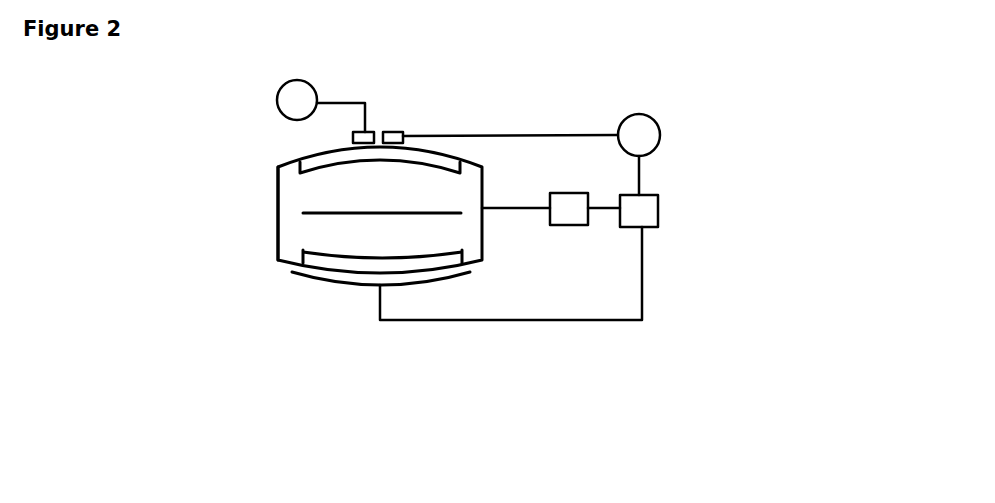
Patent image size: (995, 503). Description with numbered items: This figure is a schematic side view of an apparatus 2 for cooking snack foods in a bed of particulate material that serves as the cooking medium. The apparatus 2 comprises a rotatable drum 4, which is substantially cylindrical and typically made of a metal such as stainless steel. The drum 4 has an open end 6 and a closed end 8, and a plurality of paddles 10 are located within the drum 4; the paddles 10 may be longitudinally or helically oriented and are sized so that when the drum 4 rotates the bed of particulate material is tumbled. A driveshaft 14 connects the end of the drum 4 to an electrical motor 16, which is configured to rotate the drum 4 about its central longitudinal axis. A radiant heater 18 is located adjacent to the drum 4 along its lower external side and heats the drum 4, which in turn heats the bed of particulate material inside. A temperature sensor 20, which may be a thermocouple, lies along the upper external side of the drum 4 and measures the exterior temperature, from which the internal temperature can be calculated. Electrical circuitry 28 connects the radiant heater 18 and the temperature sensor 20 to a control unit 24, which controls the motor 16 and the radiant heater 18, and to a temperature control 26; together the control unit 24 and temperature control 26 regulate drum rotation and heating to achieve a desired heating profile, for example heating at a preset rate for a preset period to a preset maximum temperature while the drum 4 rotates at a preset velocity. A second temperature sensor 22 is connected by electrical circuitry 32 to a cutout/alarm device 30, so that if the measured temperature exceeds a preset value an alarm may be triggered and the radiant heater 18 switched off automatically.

The apparatus 2 is at (178, 199).
The rotatable drum 4 is at (285, 163).
The open end 6 is at (278, 190).
The closed end 8 is at (487, 182).
The paddles 10 is at (352, 212).
The driveshaft 14 is at (522, 208).
The electrical motor 16 is at (570, 215).
The radiant heater 18 is at (343, 287).
The temperature sensor 20 is at (402, 132).
The second temperature sensor 22 is at (367, 132).
The control unit 24 is at (660, 215).
The temperature control 26 is at (643, 132).
The electrical circuitry 28 is at (495, 315).
The cutout/alarm device 30 is at (295, 97).
The electrical circuitry 32 is at (333, 103).